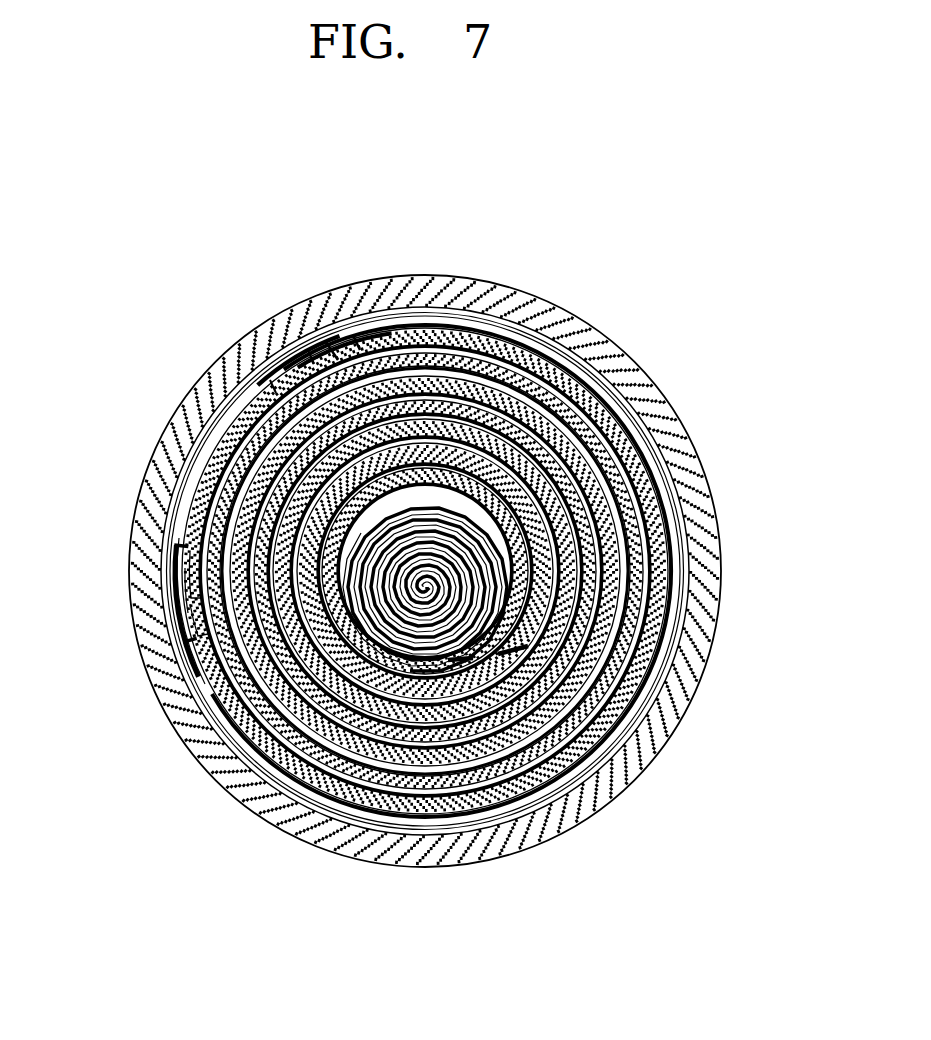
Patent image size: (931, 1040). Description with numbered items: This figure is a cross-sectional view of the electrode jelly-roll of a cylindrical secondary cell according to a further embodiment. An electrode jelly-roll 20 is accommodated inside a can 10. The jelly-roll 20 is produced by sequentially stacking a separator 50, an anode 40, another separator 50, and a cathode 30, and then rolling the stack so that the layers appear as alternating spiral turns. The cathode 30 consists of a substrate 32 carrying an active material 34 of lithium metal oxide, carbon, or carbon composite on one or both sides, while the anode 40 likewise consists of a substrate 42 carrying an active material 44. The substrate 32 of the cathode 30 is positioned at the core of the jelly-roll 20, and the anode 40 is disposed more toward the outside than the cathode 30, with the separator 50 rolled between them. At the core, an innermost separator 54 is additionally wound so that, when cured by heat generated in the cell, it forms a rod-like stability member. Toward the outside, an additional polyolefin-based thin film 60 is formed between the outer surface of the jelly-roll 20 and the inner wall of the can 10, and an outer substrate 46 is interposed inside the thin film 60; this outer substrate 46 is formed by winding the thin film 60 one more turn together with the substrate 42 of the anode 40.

The can 10 is at (603, 337).
The electrode jelly-roll 20 is at (187, 632).
The cathode 30 is at (509, 571).
The substrate 32 is at (490, 582).
The active material 34 is at (477, 571).
The anode 40 is at (325, 287).
The substrate 42 is at (288, 352).
The active material 44 is at (347, 328).
The outer substrate 46 is at (493, 330).
The separator 50 is at (190, 538).
The innermost separator 54 is at (395, 607).
The polyolefin-based thin film 60 is at (205, 708).